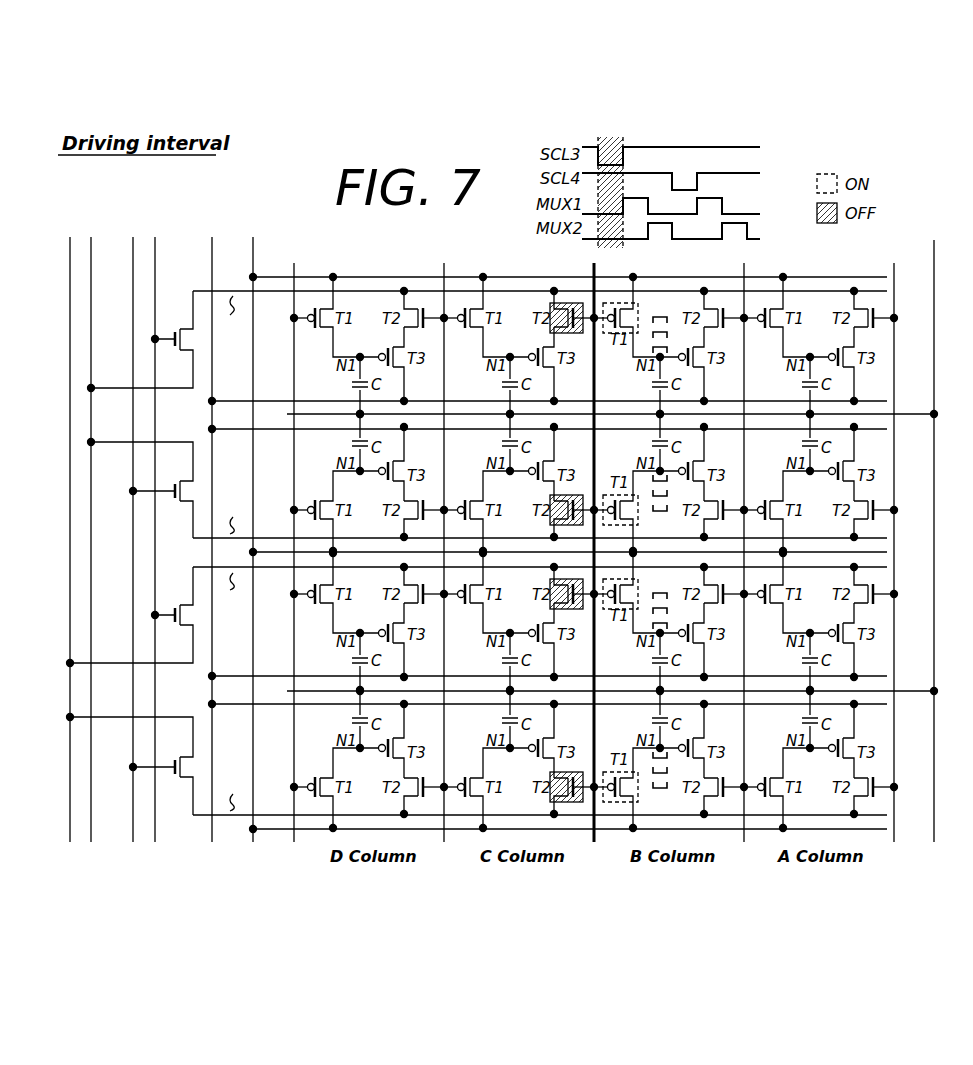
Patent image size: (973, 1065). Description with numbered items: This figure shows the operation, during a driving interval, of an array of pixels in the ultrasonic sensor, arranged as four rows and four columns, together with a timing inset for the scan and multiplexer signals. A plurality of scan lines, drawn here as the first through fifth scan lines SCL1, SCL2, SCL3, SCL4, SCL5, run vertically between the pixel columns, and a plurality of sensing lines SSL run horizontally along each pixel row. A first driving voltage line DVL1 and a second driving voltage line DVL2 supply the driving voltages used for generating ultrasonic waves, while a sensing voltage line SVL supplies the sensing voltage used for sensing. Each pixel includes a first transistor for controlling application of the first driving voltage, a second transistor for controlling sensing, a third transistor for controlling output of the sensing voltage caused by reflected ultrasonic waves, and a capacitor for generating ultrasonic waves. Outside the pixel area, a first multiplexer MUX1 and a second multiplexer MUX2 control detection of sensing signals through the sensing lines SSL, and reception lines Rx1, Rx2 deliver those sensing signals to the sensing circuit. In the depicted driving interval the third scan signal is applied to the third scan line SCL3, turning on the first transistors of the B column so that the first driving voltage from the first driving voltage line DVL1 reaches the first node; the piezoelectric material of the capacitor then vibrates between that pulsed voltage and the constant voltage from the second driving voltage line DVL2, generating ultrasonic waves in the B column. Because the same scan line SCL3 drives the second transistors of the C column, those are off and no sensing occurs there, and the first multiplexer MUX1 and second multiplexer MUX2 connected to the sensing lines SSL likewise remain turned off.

The reception line Rx1 is at (92, 522).
The reception line Rx2 is at (71, 522).
The first multiplexer MUX1 is at (156, 515).
The second multiplexer MUX2 is at (134, 515).
The sensing voltage line SVL is at (212, 237).
The first driving voltage line DVL1 is at (255, 237).
The second driving voltage line DVL2 is at (936, 238).
The sensing line SSL is at (477, 553).
The first scan line SCL1 is at (893, 564).
The second scan line SCL2 is at (745, 564).
The third scan line SCL3 is at (593, 564).
The fourth scan line SCL4 is at (445, 564).
The fifth scan line SCL5 is at (295, 564).